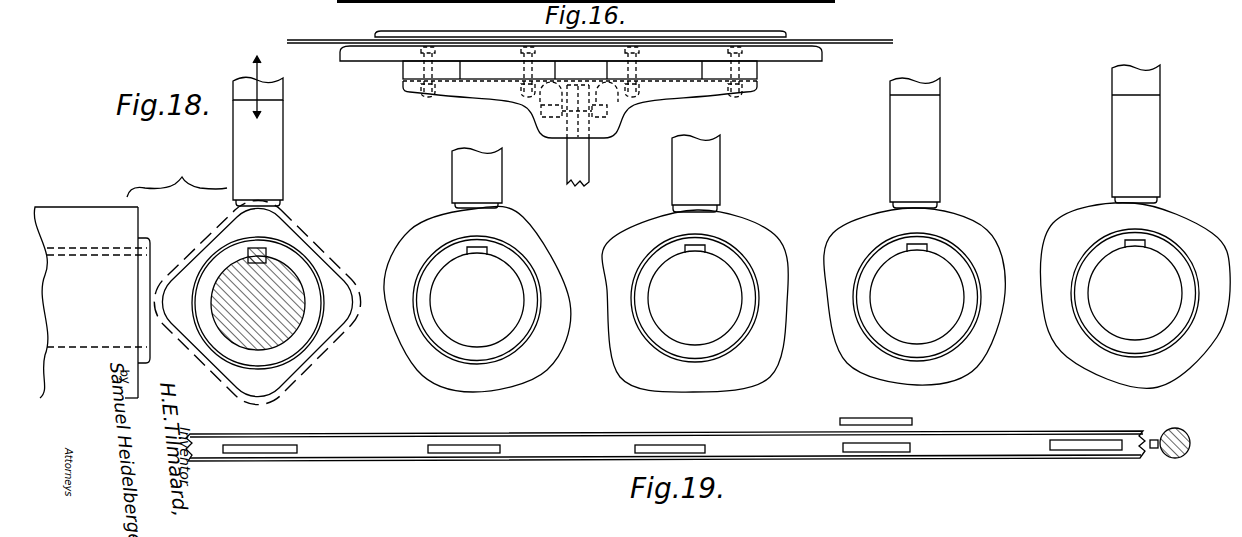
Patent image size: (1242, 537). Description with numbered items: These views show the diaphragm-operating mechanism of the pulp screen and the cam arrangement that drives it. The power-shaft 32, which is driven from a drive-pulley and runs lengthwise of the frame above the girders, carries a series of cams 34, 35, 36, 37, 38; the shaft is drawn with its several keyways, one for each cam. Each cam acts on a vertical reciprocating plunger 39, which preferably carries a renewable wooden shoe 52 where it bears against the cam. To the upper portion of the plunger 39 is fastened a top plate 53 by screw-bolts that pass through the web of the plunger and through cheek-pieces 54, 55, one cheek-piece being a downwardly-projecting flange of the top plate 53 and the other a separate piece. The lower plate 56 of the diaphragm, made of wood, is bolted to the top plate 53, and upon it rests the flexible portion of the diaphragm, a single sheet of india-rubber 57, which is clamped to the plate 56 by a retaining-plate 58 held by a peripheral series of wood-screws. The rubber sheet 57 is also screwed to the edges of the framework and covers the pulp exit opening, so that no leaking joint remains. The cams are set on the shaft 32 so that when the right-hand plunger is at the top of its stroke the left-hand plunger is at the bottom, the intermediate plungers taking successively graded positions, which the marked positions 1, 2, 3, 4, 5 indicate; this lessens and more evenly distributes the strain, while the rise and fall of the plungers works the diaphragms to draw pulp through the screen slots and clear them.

In FIG. 18, the first position mark 1 is at (255, 223).
In FIG. 18, the second position mark 2 is at (278, 228).
In FIG. 18, the third position mark 3 is at (300, 240).
In FIG. 18, the fourth position mark 4 is at (318, 257).
In FIG. 18, the fifth position mark 5 is at (332, 278).
In FIG. 18, the power-shaft 32 is at (287, 330).
In FIG. 19, the power-shaft 32 is at (578, 462).
In FIG. 18, the cam 34 is at (293, 375).
In FIG. 19, the cam 35 is at (523, 363).
In FIG. 19, the cam 36 is at (745, 363).
In FIG. 19, the cam 37 is at (957, 372).
In FIG. 19, the cam 38 is at (1192, 352).
In FIG. 16, the reciprocating plunger 39 is at (568, 170).
In FIG. 18, the reciprocating plunger 39 is at (275, 91).
In FIG. 18, the wooden shoe 52 is at (272, 164).
In FIG. 19, the wooden shoe 52 is at (477, 178).
In FIG. 16, the top plate 53 is at (672, 88).
In FIG. 16, the cheek-piece 54 is at (593, 127).
In FIG. 16, the cheek-piece 55 is at (565, 125).
In FIG. 16, the lower plate of the diaphragm 56 is at (380, 54).
In FIG. 16, the india-rubber sheet 57 is at (834, 39).
In FIG. 16, the retaining-plate 58 is at (766, 33).